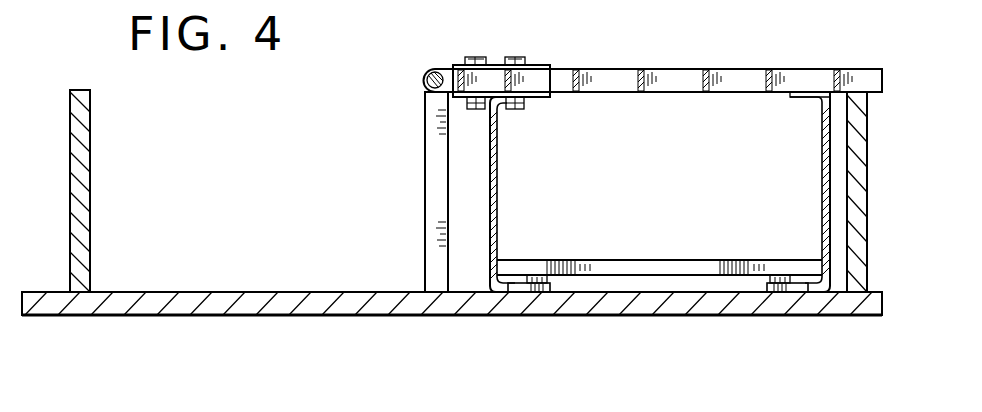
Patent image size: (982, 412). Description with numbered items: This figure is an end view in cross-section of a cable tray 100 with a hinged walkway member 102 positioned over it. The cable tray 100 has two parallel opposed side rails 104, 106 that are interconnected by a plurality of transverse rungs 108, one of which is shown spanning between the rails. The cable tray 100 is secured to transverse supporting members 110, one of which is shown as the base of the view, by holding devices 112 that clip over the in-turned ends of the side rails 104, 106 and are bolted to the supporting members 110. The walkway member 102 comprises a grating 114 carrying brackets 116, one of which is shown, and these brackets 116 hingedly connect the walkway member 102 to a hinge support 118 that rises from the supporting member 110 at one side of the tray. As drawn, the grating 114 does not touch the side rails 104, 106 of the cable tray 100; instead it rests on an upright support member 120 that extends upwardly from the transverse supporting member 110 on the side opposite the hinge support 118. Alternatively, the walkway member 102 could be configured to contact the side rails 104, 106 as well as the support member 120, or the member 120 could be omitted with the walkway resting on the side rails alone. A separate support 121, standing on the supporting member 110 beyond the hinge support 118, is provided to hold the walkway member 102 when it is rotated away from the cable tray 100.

The cable tray 100 is at (832, 142).
The walkway member 102 is at (822, 69).
The side rail 104 is at (821, 164).
The side rail 106 is at (499, 172).
The transverse rung 108 is at (752, 260).
The transverse supporting member 110 is at (584, 300).
The holding device 112 is at (537, 275).
The grating 114 is at (671, 69).
The bracket 116 is at (536, 65).
The hinge support 118 is at (436, 190).
The upright support member 120 is at (856, 198).
The support 121 is at (90, 217).